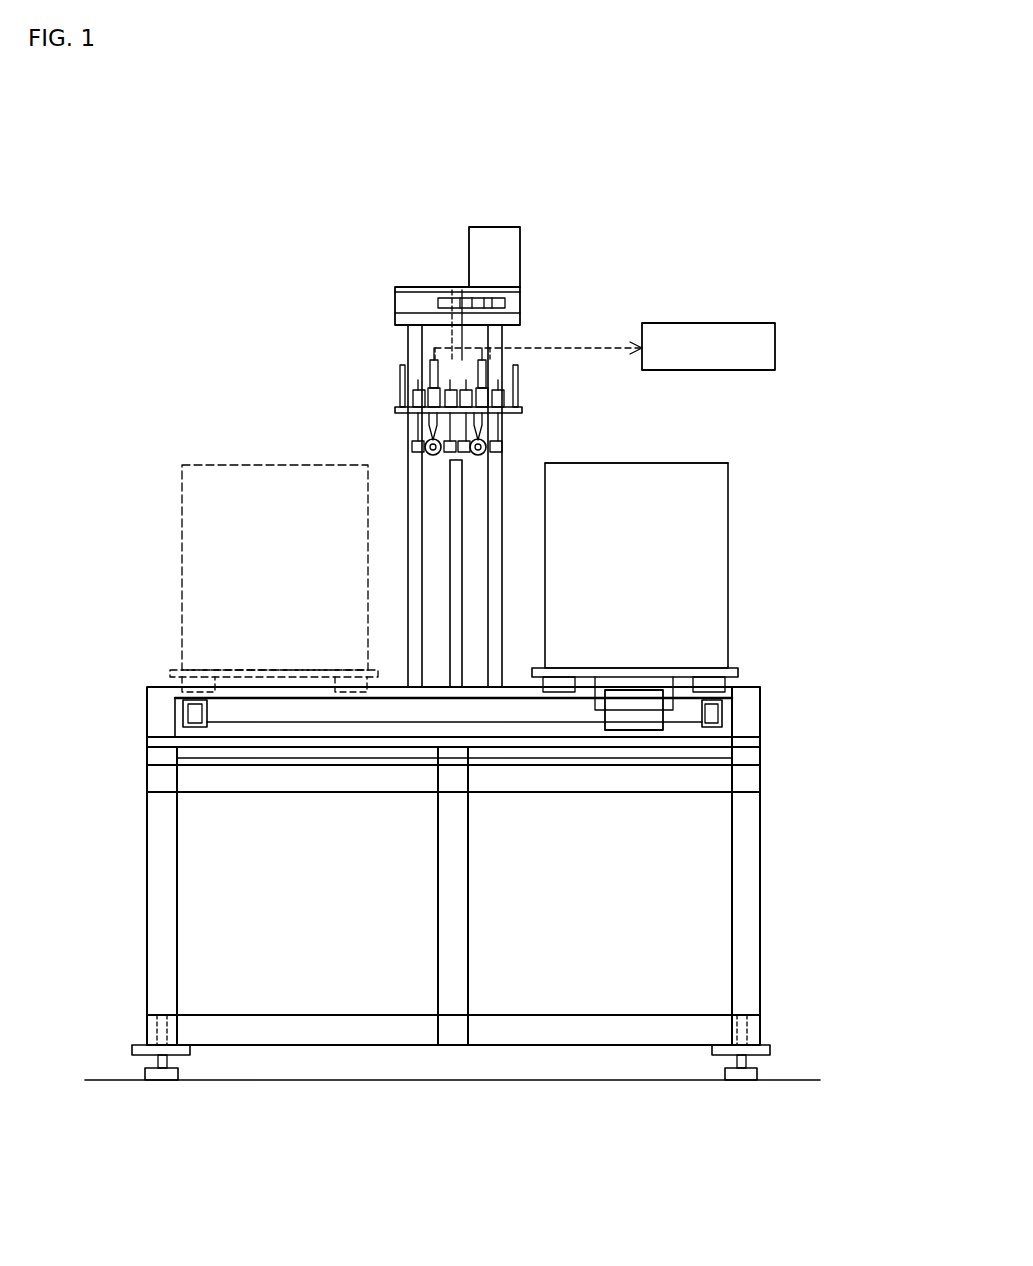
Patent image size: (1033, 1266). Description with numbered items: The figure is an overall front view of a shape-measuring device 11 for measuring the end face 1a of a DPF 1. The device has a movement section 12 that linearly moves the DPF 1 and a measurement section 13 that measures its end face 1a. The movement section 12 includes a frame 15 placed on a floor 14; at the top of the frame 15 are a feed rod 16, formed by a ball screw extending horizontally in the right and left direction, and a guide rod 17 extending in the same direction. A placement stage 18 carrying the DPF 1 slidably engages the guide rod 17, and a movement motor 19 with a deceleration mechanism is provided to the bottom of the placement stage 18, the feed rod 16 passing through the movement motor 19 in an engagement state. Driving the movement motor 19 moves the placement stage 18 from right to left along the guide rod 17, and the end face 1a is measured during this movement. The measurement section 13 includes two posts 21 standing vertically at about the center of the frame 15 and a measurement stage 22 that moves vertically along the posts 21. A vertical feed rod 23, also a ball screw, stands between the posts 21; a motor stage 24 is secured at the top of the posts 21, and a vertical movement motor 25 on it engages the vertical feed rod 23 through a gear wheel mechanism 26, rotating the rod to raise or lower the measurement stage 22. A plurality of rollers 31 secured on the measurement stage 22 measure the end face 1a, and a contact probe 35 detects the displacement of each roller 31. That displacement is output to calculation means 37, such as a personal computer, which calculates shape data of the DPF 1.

The DPF 1 is at (232, 465).
The end face 1a is at (688, 465).
The shape-measuring device 11 is at (332, 297).
The movement section 12 is at (770, 675).
The measurement section 13 is at (392, 387).
The floor 14 is at (780, 1088).
The frame 15 is at (760, 897).
The feed rod 16 is at (568, 710).
The guide rod 17 is at (752, 692).
The placement stage 18 is at (738, 668).
The movement motor 19 is at (640, 725).
The posts 21 is at (417, 520).
The measurement stage 22 is at (522, 410).
The vertical feed rod 23 is at (452, 548).
The motor stage 24 is at (522, 322).
The vertical movement motor 25 is at (493, 227).
The gear wheel mechanism 26 is at (505, 303).
The rollers 31 is at (410, 445).
The contact probe 35 is at (408, 372).
The calculation means 37 is at (706, 323).